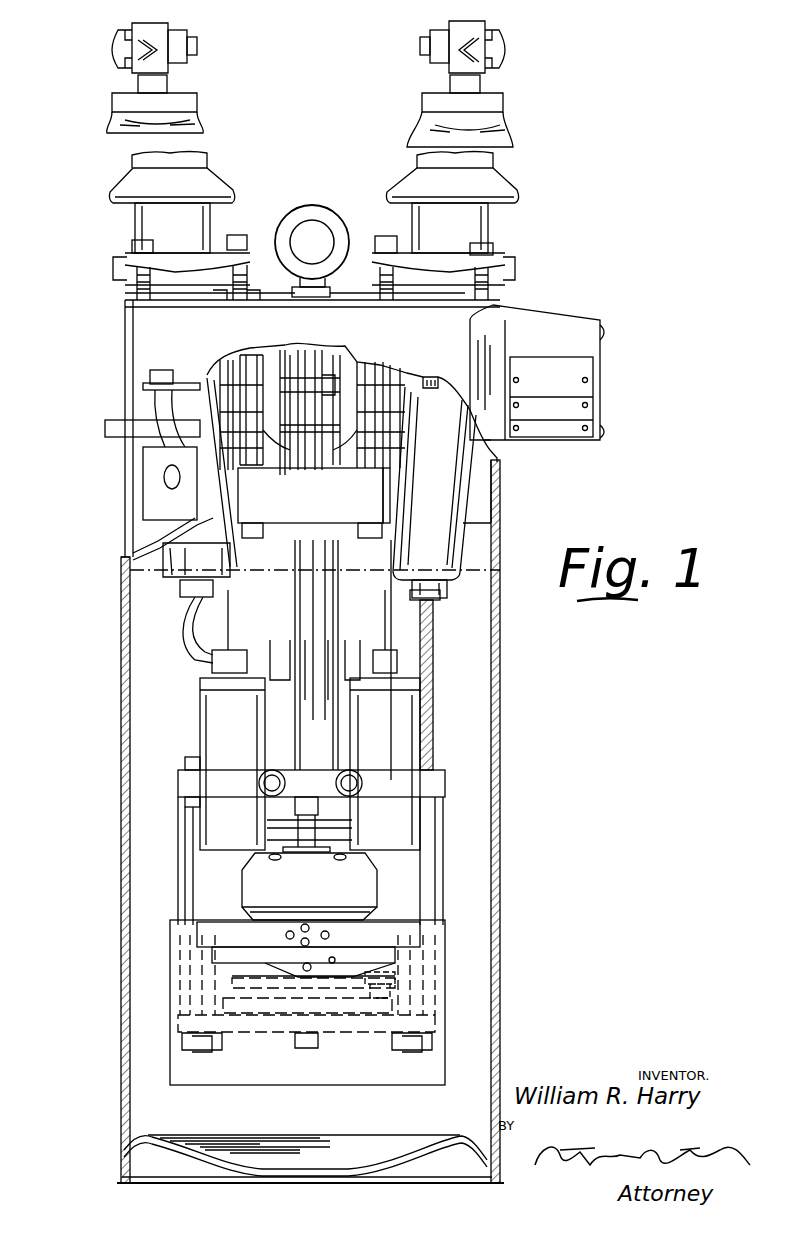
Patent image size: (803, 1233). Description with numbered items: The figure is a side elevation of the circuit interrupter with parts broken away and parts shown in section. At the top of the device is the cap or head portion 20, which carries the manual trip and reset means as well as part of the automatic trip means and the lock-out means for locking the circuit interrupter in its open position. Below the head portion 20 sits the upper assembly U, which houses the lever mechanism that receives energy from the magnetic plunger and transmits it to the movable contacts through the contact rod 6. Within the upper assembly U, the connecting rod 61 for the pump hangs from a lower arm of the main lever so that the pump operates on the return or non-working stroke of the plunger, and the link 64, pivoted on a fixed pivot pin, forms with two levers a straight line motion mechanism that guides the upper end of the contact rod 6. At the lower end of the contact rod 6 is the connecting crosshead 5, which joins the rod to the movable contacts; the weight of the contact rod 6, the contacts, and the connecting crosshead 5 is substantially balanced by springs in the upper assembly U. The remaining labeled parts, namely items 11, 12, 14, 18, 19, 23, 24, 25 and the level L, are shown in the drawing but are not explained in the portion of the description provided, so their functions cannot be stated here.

The connecting crosshead 5 is at (275, 960).
The contact rod 6 is at (317, 840).
The cylinder 11 is at (395, 722).
The cylinder 12 is at (217, 705).
The chuck body 14 is at (350, 890).
The tank 18 is at (121, 880).
The tank wall 19 is at (130, 864).
The cap or head portion 20 is at (155, 340).
The terminal connector 23 is at (190, 75).
The insulator 24 is at (125, 196).
The base plate 25 is at (370, 1070).
The connecting rod for the pump 61 is at (338, 605).
The link 64 is at (328, 430).
The liquid level L is at (168, 763).
The upper assembly U is at (278, 560).